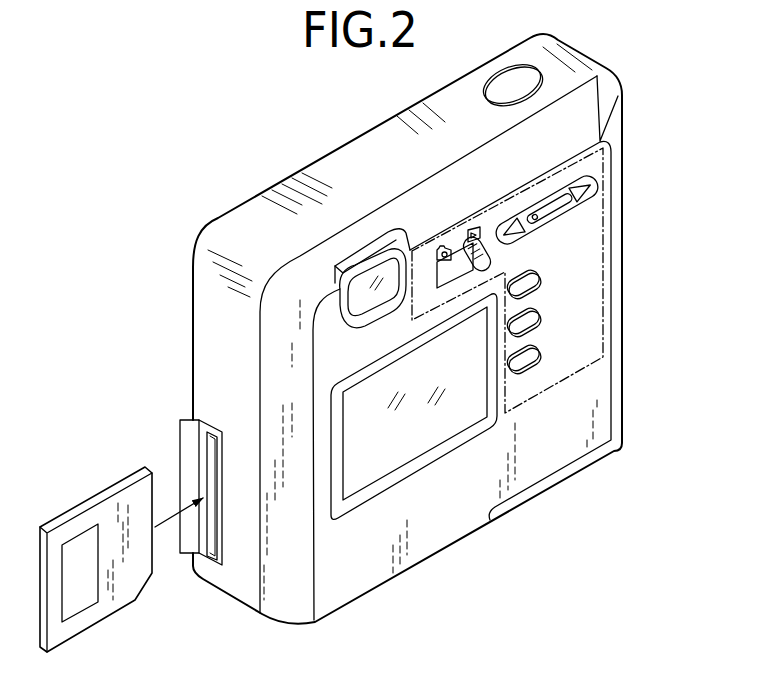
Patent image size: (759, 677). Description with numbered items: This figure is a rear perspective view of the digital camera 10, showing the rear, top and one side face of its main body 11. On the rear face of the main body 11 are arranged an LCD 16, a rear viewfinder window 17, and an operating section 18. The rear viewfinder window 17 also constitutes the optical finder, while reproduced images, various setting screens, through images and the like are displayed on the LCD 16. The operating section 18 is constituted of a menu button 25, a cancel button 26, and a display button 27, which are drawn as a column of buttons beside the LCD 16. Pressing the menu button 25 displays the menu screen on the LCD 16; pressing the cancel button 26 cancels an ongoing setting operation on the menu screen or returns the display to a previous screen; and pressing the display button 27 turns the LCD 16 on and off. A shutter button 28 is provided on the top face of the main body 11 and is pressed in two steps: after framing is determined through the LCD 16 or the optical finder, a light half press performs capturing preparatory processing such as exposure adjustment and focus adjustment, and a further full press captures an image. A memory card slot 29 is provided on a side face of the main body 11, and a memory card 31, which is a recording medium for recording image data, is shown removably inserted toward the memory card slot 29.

The digital camera 10 is at (439, 312).
The main body 11 is at (407, 329).
The LCD 16 is at (412, 452).
The rear viewfinder window 17 is at (350, 300).
The operating section 18 is at (607, 242).
The menu button 25 is at (541, 284).
The cancel button 26 is at (541, 322).
The display button 27 is at (541, 360).
The shutter button 28 is at (504, 85).
The memory card slot 29 is at (211, 432).
The memory card 31 is at (98, 497).